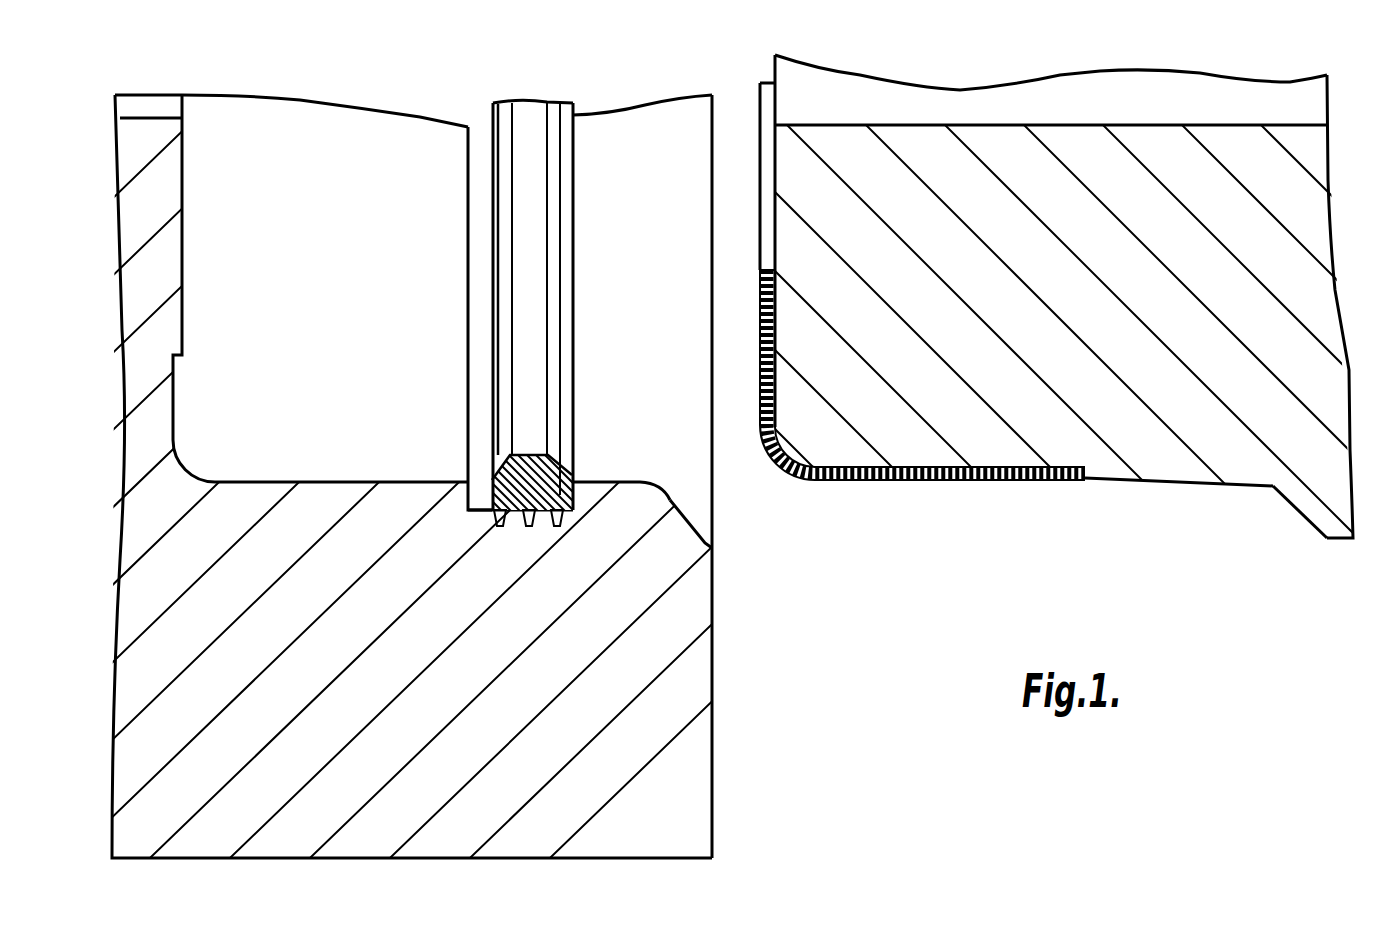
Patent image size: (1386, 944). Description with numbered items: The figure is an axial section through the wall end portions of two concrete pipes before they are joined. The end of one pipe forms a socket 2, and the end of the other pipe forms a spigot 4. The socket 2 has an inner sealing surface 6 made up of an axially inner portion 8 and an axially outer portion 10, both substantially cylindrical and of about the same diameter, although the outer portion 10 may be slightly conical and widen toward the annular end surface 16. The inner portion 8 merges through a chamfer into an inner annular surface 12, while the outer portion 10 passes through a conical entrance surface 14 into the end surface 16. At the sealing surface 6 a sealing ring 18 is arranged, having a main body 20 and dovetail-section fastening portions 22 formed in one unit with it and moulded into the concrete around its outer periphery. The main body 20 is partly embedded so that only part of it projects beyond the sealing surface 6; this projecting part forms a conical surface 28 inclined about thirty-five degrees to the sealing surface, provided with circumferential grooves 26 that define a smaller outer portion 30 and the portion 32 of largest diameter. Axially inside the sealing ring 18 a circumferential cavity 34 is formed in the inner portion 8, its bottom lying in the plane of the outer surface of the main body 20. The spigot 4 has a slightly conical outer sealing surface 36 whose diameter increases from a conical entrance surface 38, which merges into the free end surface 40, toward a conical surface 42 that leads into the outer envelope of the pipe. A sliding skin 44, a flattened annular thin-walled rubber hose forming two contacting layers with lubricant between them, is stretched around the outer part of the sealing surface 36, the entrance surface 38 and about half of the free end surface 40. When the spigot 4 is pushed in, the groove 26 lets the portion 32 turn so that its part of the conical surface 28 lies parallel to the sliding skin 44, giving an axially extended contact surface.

The socket 2 is at (693, 472).
The spigot 4 is at (693, 472).
The inner sealing surface 6 is at (456, 472).
The axially inner portion 8 is at (272, 482).
The axially outer portion 10 is at (626, 483).
The inner annular surface 12 is at (182, 330).
The conical entrance surface 14 is at (680, 512).
The annular end surface 16 is at (712, 643).
The sealing ring 18 is at (550, 409).
The main body 20 is at (529, 512).
The fastening portions 22 is at (499, 527).
The circumferential grooves 26 is at (547, 470).
The conical surface 28 is at (526, 446).
The outer portion 30 is at (563, 470).
The portion having the largest diameter 32 is at (500, 458).
The circumferential cavity 34 is at (470, 503).
The outer sealing surface 36 is at (1122, 482).
The conical entrance surface 38 is at (810, 456).
The free end surface 40 is at (760, 223).
The conical surface 42 is at (1287, 512).
The sliding skin 44 is at (931, 483).